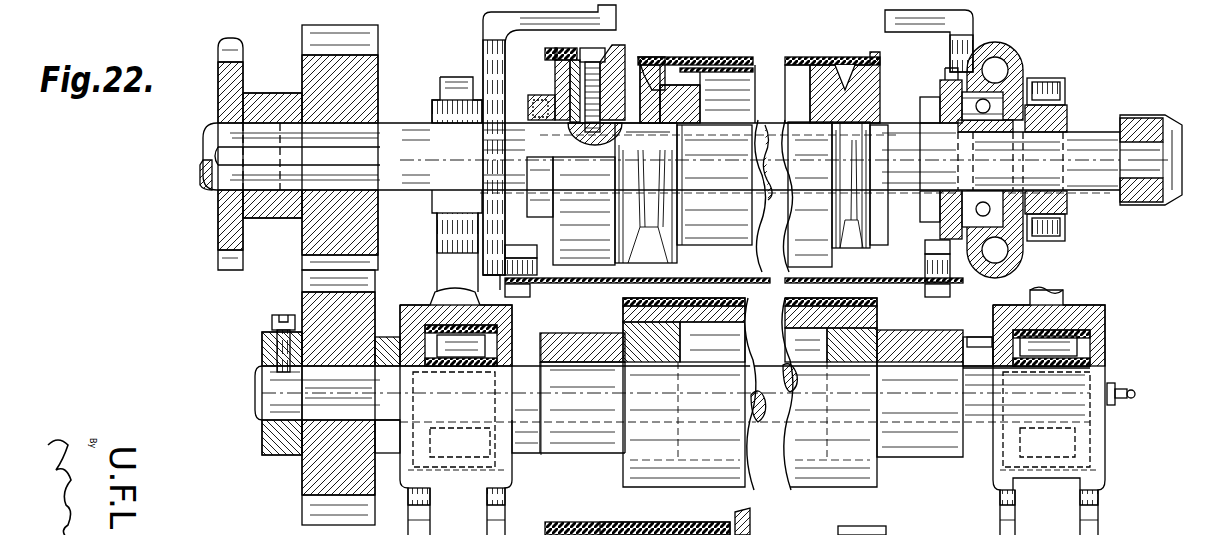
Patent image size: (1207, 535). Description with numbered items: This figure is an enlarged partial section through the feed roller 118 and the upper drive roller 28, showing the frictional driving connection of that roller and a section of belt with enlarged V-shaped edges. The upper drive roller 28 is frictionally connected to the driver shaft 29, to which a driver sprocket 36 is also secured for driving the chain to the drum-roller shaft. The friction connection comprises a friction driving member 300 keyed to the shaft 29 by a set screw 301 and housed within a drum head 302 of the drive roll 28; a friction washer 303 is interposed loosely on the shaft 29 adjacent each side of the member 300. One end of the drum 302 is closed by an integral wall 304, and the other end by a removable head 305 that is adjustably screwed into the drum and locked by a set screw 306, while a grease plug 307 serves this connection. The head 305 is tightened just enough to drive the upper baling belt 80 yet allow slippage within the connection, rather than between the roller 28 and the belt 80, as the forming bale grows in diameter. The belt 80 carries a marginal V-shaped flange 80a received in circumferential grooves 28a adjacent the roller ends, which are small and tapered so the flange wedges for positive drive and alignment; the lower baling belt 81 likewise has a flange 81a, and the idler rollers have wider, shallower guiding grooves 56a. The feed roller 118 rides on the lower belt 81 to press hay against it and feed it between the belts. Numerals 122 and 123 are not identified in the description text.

The driver shaft 29 is at (401, 128).
The driver sprocket 36 is at (222, 264).
The gear 123 is at (379, 40).
The gear 122 is at (302, 517).
The feed roller 118 is at (872, 474).
The upper drive roller 28 is at (740, 238).
The circumferential grooves 28a is at (652, 232).
The upper baling belt 80 is at (803, 57).
The V-shaped flange 80a is at (855, 58).
The lower baling belt 81 is at (570, 522).
The V-shaped flange 81a is at (692, 522).
The grooves 56a is at (738, 520).
The friction driving member 300 is at (610, 60).
The set screw 301 is at (598, 57).
The drum head 302 is at (572, 56).
The friction washer 303 is at (556, 58).
The integral wall 304 is at (652, 63).
The removable head 305 is at (556, 78).
The set screw 306 is at (486, 22).
The grease plug 307 is at (545, 100).